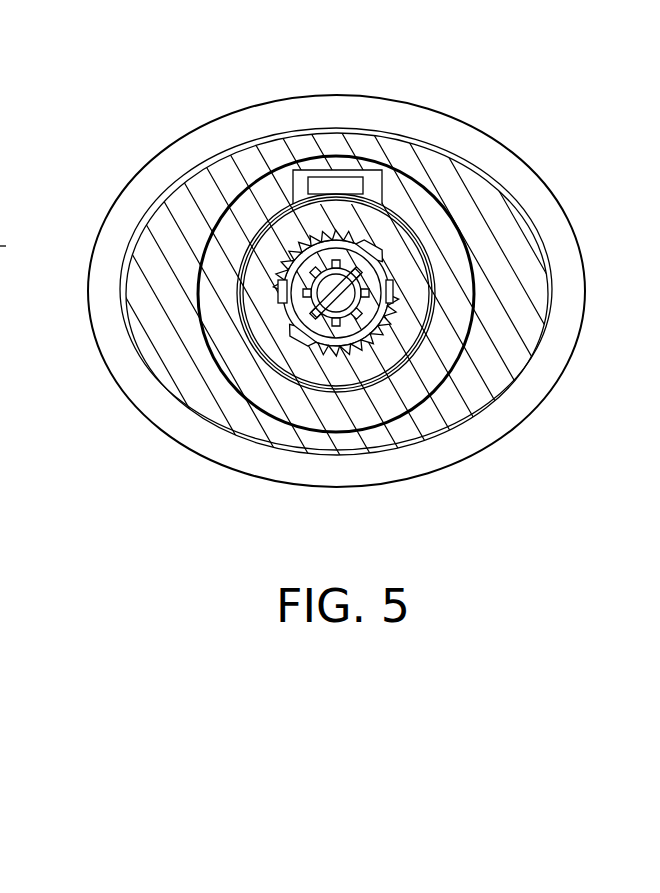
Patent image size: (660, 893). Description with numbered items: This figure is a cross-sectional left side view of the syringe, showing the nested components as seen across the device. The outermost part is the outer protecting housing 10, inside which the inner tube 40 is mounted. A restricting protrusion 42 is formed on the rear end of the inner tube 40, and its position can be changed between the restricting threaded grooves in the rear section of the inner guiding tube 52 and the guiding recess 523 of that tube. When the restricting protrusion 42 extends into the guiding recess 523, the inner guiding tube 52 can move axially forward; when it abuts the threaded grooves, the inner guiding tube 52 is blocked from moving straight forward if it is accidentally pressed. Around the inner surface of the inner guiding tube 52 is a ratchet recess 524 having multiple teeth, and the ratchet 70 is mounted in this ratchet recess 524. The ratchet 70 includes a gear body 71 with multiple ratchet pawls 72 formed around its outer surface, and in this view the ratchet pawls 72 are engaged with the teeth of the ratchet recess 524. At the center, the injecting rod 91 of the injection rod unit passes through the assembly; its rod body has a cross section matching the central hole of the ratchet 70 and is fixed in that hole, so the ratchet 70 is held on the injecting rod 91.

The outer protecting housing 10 is at (405, 137).
The inner tube 40 is at (278, 157).
The restricting protrusion 42 is at (347, 184).
The inner guiding tube 52 is at (387, 387).
The guiding recess 523 is at (308, 200).
The ratchet recess 524 is at (405, 268).
The ratchet 70 is at (398, 262).
The gear body 71 is at (374, 248).
The ratchet pawls 72 is at (395, 308).
The injecting rod 91 is at (355, 295).